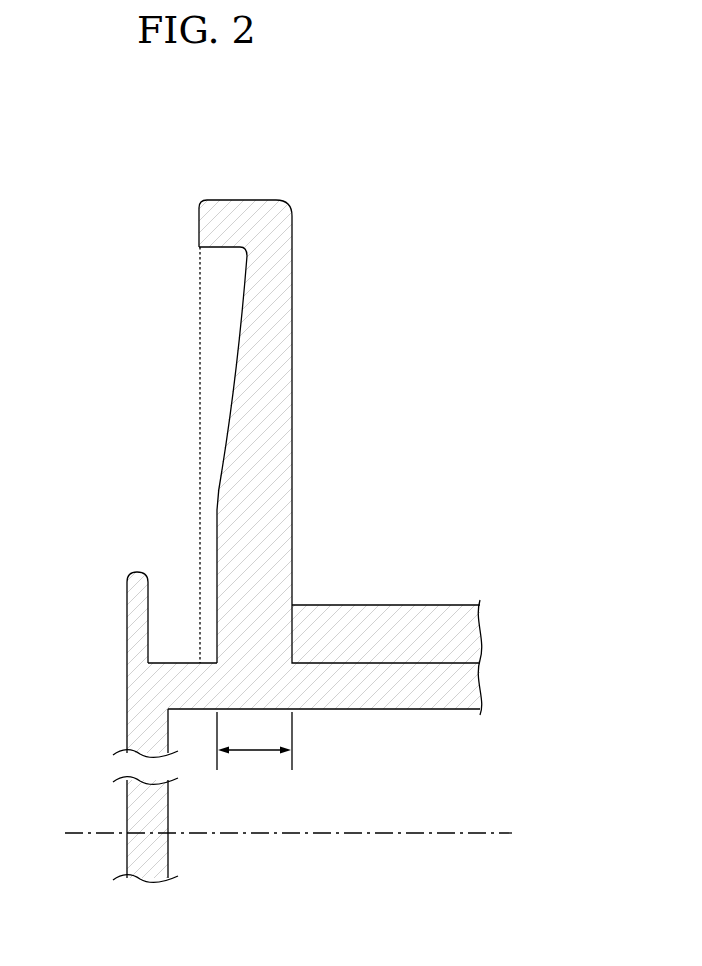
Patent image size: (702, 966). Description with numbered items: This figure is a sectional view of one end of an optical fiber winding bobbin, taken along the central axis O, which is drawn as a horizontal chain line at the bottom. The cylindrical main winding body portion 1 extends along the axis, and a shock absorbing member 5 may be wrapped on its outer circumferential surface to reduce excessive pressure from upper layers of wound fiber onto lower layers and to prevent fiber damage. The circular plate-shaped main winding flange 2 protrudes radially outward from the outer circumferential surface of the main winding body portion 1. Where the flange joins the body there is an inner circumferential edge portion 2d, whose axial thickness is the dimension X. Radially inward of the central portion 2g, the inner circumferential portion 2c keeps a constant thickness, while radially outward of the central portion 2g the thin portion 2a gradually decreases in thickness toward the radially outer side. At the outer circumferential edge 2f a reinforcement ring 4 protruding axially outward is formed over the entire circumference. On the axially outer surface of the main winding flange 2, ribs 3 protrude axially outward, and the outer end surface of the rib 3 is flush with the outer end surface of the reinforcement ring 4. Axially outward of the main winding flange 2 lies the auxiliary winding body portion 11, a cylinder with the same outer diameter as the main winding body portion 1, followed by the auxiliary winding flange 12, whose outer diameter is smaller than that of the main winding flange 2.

The main winding body portion 1 is at (450, 685).
The main winding flange 2 is at (304, 202).
The thin portion 2a is at (239, 318).
The inner circumferential portion 2c is at (217, 587).
The inner circumferential edge portion 2d is at (292, 663).
The outer circumferential edge 2f is at (242, 200).
The central portion 2g is at (217, 495).
The rib 3 is at (200, 357).
The reinforcement ring 4 is at (199, 225).
The shock absorbing member 5 is at (405, 627).
The auxiliary winding body portion 11 is at (183, 688).
The auxiliary winding flange 12 is at (127, 608).
The central axis O is at (480, 833).
The dimension X is at (254, 741).